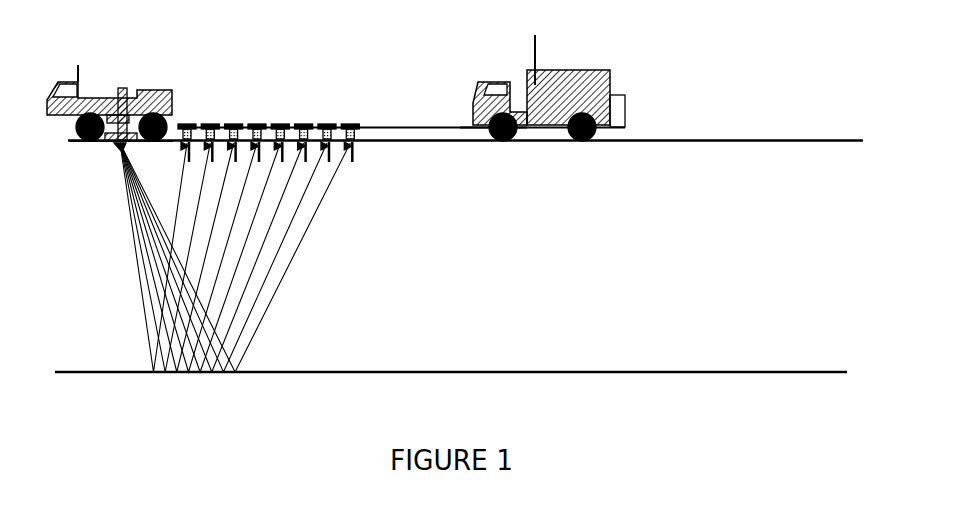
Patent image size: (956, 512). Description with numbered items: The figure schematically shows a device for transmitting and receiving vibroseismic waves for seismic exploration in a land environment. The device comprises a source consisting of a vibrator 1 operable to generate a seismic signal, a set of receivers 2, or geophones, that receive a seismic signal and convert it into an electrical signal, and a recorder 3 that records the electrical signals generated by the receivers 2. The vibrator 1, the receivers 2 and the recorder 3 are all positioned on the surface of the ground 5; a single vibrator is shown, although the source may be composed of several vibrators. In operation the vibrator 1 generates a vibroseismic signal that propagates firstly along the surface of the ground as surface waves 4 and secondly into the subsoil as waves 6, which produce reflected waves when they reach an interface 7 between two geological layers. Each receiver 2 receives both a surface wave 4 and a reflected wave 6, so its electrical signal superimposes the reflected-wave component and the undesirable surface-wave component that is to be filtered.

The vibrator 1 is at (120, 88).
The receivers 2 is at (242, 125).
The recorder 3 is at (610, 70).
The surface waves 4 is at (187, 145).
The ground 5 is at (757, 141).
The waves 6 is at (150, 249).
The interface 7 is at (757, 373).